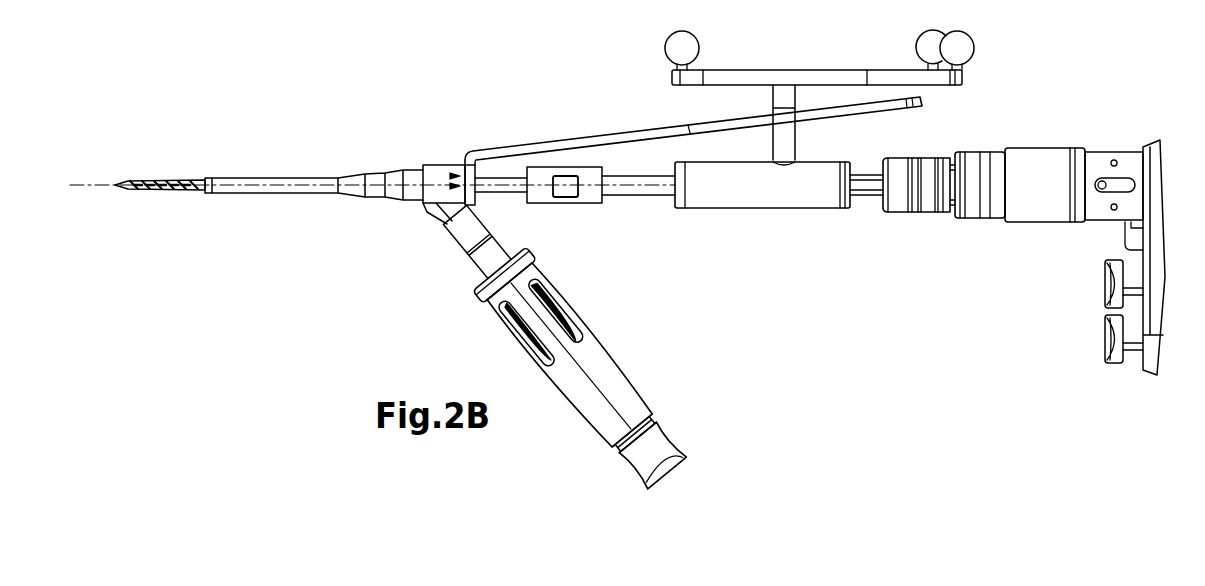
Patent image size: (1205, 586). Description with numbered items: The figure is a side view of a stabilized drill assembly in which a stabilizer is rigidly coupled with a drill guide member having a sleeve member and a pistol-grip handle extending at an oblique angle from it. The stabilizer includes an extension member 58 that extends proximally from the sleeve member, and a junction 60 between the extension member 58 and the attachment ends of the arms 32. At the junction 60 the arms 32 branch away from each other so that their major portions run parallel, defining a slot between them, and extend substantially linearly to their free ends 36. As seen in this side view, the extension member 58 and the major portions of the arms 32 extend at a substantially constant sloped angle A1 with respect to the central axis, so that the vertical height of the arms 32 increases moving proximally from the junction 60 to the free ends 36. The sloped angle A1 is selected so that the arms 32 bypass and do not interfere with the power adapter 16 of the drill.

The power adapter 16 is at (983, 224).
The arms 32 is at (830, 106).
The free ends 36 is at (925, 102).
The extension member 58 is at (537, 141).
The junction 60 is at (692, 128).
The sloped angle A1 is at (628, 112).